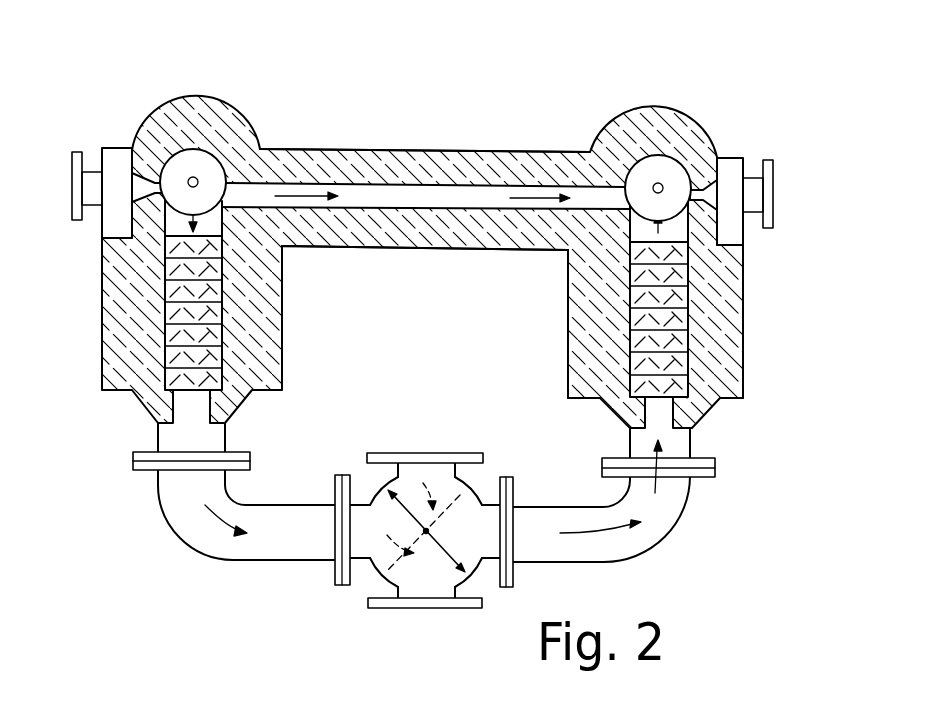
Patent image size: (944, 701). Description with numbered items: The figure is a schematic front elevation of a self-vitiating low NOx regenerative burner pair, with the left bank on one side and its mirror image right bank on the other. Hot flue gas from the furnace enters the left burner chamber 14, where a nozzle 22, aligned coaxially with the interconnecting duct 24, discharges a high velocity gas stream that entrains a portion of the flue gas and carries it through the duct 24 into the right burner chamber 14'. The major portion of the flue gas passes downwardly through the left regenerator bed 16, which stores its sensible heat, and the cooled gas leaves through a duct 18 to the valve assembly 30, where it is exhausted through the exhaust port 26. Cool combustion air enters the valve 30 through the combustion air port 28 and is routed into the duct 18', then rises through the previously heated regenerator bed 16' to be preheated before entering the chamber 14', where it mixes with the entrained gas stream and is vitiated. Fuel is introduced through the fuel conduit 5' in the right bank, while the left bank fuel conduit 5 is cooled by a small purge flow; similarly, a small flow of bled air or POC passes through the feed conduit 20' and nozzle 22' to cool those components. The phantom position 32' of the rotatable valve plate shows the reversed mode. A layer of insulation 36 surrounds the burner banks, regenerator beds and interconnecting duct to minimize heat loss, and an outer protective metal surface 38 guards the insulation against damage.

The fuel conduit 5 is at (219, 123).
The fuel conduit 5' is at (693, 134).
The burner chamber 14 is at (232, 155).
The burner chamber 14' is at (701, 158).
The regenerator bed 16 is at (137, 313).
The regenerator bed 16' is at (722, 319).
The duct 18 is at (234, 491).
The duct 18' is at (614, 495).
The feed conduit 20' is at (781, 201).
The nozzle 22 is at (125, 146).
The nozzle 22' is at (748, 165).
The interconnecting duct 24 is at (447, 187).
The exhaust port 26 is at (383, 608).
The combustion air port 28 is at (378, 453).
The valve assembly 30 is at (486, 476).
The valve plate position 32' is at (439, 488).
The insulation layer 36 is at (568, 325).
The outer protective metal surface 38 is at (427, 250).